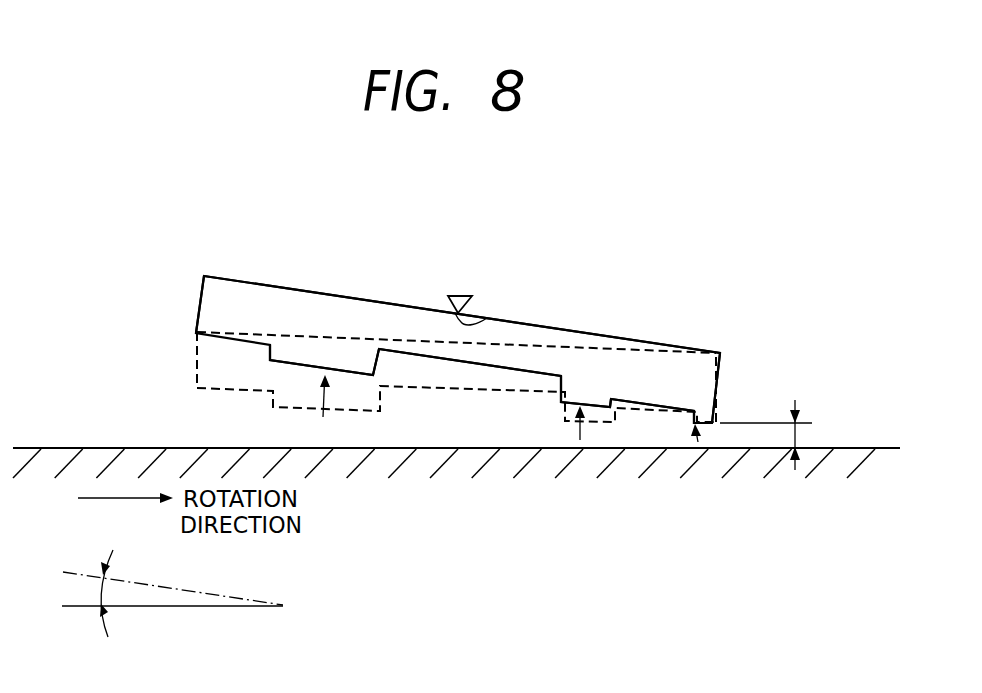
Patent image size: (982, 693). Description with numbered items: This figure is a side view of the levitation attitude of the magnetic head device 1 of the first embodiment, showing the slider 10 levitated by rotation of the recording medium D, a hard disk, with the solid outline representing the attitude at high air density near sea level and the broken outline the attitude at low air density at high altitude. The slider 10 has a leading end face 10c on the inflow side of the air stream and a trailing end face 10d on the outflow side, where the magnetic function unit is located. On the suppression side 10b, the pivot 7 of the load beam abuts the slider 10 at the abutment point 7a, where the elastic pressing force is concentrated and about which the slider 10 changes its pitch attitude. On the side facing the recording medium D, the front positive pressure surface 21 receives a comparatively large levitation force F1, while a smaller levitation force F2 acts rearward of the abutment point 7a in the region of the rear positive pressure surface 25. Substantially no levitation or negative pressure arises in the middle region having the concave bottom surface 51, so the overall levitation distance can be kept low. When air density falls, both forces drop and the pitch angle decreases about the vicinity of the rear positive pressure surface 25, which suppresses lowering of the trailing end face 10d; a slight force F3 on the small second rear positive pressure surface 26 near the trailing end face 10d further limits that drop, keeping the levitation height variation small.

The magnetic head device 1 is at (453, 359).
The slider 10 is at (453, 370).
The suppression side 10b is at (565, 328).
The leading end face 10c is at (197, 307).
The trailing end face 10d is at (719, 383).
The pivot 7 is at (462, 292).
The abutment point 7a is at (487, 318).
The front positive pressure surface 21 is at (297, 354).
The rear positive pressure surface 25 is at (597, 409).
The second rear positive pressure surface 26 is at (698, 425).
The concave bottom surface 51 is at (493, 368).
The levitation force F1 is at (337, 411).
The levitation force F2 is at (578, 427).
The slight force F3 is at (690, 437).
The recording medium D is at (97, 462).